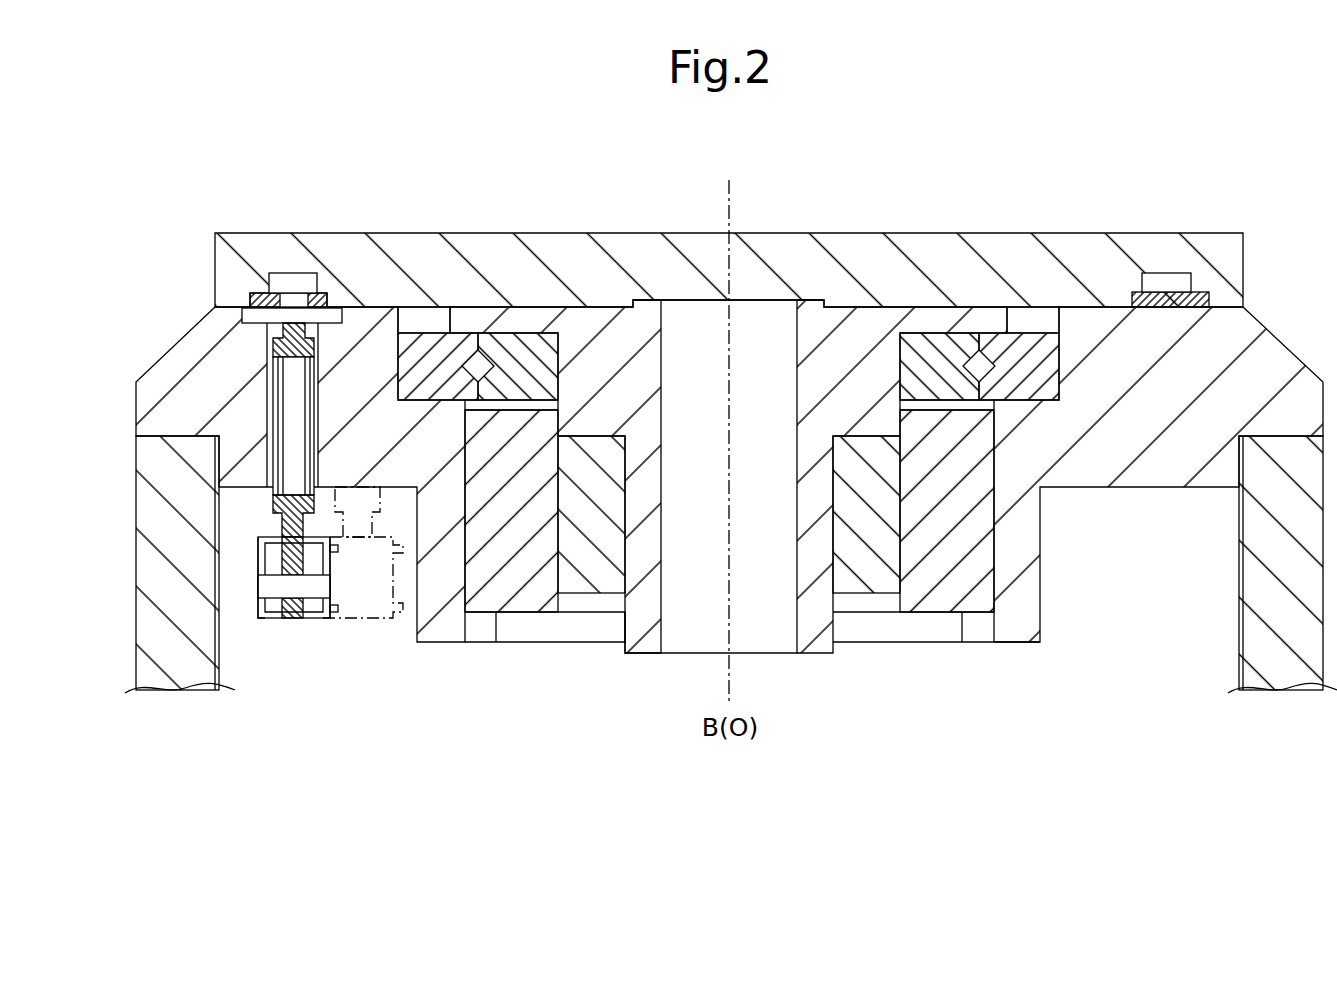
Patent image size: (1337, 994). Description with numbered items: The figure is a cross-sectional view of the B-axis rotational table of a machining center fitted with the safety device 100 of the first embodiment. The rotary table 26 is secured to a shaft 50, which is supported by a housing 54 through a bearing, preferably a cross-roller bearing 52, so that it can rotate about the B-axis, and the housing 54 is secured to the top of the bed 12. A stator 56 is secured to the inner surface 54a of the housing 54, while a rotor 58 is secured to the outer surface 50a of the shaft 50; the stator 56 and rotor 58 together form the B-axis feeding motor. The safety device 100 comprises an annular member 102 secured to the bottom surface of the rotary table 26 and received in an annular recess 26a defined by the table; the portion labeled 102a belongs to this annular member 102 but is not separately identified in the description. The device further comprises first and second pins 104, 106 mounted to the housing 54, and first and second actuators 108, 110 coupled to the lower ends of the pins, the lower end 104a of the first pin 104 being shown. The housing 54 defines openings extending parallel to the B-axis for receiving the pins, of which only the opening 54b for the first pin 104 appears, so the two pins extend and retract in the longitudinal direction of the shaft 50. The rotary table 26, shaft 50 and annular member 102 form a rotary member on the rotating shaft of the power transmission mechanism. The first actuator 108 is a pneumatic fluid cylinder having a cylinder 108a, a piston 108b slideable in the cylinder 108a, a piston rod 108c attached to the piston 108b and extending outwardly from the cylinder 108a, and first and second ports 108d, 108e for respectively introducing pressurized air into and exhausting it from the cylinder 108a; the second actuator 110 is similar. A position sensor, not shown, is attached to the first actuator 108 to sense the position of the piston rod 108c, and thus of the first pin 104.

The safety device 100 is at (202, 280).
The annular member 102 is at (265, 293).
The bolt head 102a is at (300, 290).
The second pin 106 is at (368, 503).
The cross-roller bearing 52 is at (417, 340).
The shaft 50 is at (613, 320).
The annular recess 26a is at (1127, 292).
The rotary table 26 is at (1232, 245).
The housing 54 is at (1270, 365).
The opening 54b is at (262, 377).
The first pin 104 is at (288, 430).
The lower end 104a is at (305, 525).
The first actuator 108 is at (300, 622).
The cylinder 108a is at (265, 620).
The piston 108b is at (265, 588).
The piston rod 108c is at (290, 522).
The first port 108d is at (328, 620).
The second port 108e is at (338, 548).
The second actuator 110 is at (395, 622).
The inner surface 54a is at (473, 612).
The stator 56 is at (523, 575).
The outer surface 50a is at (622, 610).
The rotor 58 is at (863, 582).
The bed 12 is at (1292, 672).